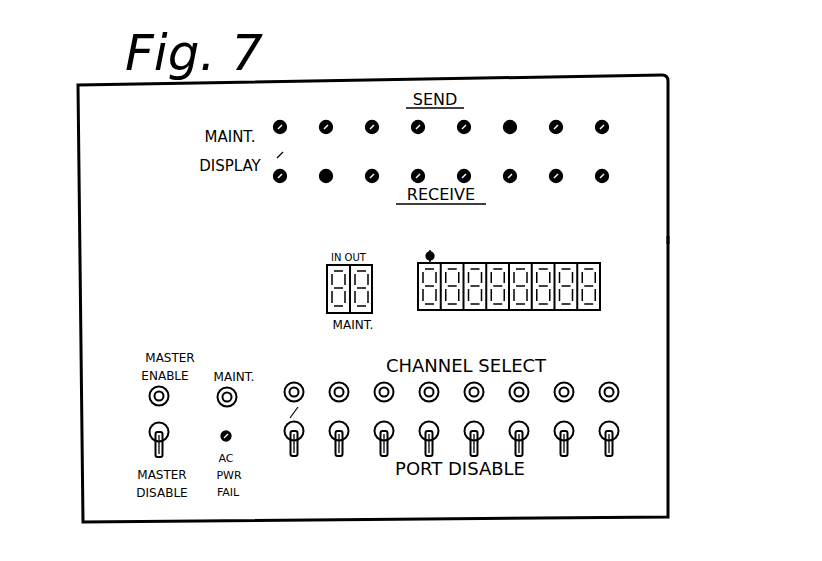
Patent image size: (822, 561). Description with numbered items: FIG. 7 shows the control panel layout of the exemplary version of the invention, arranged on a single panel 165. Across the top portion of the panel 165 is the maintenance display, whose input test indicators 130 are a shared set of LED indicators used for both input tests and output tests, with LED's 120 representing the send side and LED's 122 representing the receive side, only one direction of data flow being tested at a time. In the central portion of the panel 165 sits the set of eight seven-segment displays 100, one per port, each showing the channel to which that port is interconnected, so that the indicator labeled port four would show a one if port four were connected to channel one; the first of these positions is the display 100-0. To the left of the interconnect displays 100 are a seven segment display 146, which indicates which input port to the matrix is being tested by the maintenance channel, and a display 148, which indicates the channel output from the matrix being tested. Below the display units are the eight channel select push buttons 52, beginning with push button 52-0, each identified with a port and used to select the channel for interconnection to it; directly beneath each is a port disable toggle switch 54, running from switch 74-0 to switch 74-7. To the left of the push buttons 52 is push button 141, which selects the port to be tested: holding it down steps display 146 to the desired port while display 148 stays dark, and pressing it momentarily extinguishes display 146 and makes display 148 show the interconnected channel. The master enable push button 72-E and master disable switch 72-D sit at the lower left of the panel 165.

The input test indicators 130 is at (634, 147).
The LED's 120 is at (597, 122).
The LED's 122 is at (595, 186).
The seven segment display 146 is at (327, 296).
The display 148 is at (372, 298).
The seven-segment displays 100 is at (628, 286).
The port 0 indicator 100-0 is at (441, 224).
The panel 165 is at (668, 240).
The master enable button 72-E is at (143, 398).
The master disable switch 72-D is at (142, 443).
The push button 141 is at (215, 399).
The push buttons 52 is at (640, 387).
The channel select button 0 52-0 is at (322, 354).
The port disable switches 54 is at (640, 431).
The port disable switch 0 74-0 is at (292, 458).
The port disable switch 7 74-7 is at (606, 452).